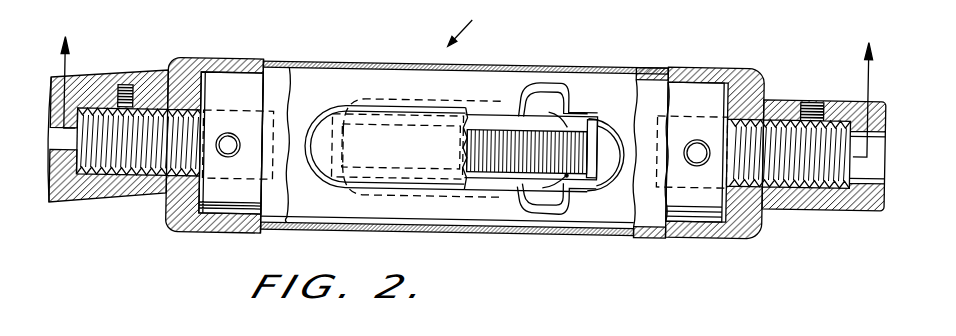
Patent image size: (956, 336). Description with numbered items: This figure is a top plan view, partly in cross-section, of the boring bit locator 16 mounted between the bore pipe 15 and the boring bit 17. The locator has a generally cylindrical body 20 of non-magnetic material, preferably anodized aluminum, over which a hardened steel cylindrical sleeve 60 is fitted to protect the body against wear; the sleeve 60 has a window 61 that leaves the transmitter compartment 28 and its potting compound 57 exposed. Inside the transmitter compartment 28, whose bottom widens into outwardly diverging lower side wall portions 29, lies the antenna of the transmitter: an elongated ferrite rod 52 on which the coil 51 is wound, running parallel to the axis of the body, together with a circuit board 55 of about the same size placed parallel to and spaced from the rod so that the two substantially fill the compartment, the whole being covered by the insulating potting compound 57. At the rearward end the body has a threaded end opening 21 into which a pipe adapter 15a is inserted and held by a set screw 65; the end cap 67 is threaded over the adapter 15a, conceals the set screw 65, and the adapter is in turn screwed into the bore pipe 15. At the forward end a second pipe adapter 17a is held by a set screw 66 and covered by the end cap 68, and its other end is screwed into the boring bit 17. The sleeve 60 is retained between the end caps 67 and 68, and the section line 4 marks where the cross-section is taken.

The section line 4- 4 is at (467, 83).
The bore pipe 15 is at (830, 193).
The pipe adapter 15a is at (775, 114).
The boring bit locator 16 is at (470, 23).
The boring bit 17 is at (84, 186).
The pipe adapter 17a is at (144, 178).
The cylindrical body 20 is at (645, 79).
The threaded end opening 21 is at (693, 195).
The transmitter compartment 28 is at (502, 180).
The outwardly diverging lower side wall portions 29 is at (500, 99).
The coil 51 is at (480, 127).
The ferrite rod 52 is at (585, 129).
The circuit board 55 is at (593, 172).
The potting compound 57 is at (378, 126).
The cylindrical sleeve 60 is at (317, 69).
The window 61 is at (322, 175).
The set screw 65 is at (688, 144).
The set screw 66 is at (221, 140).
The end cap 67 is at (737, 65).
The end cap 68 is at (191, 62).